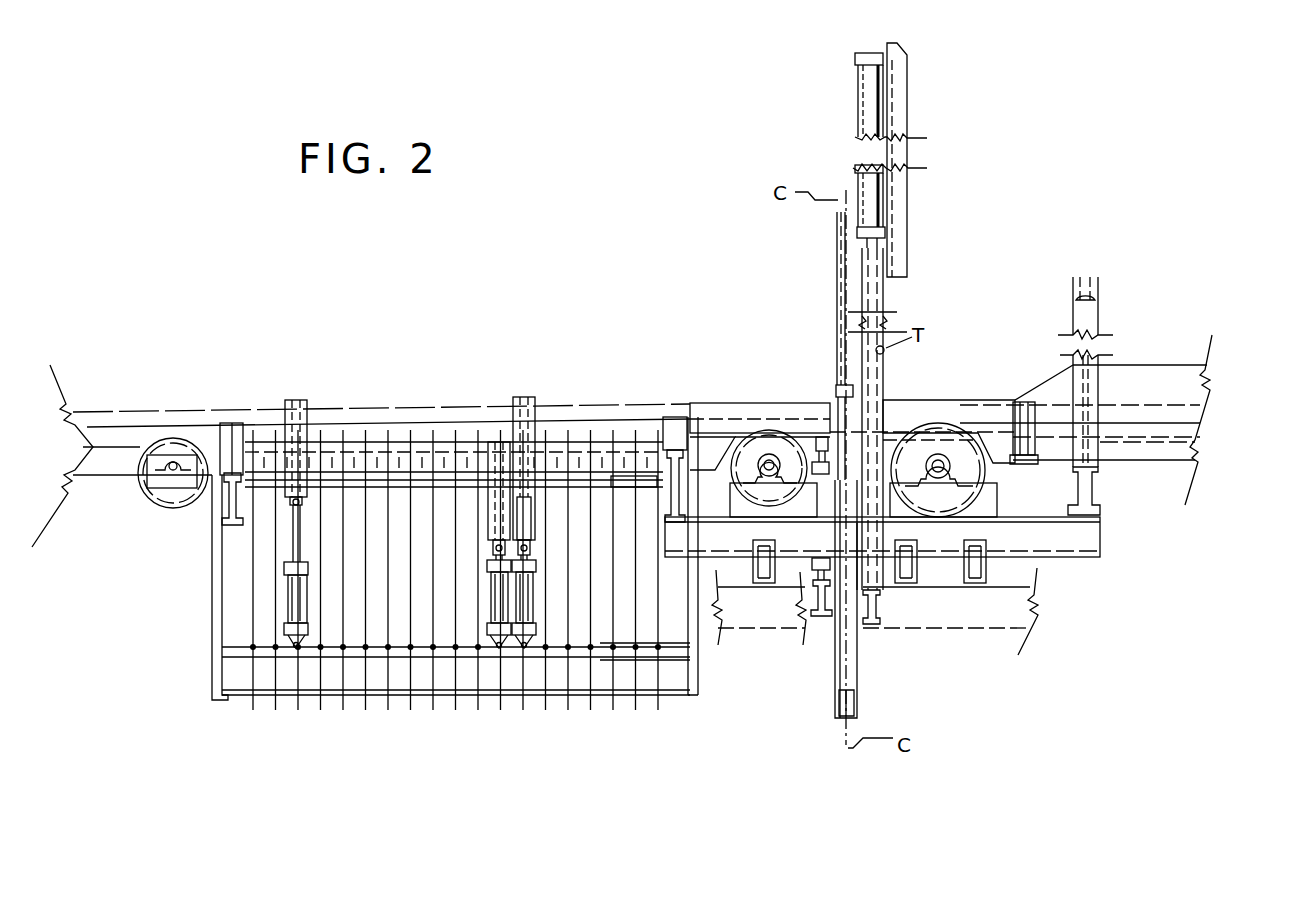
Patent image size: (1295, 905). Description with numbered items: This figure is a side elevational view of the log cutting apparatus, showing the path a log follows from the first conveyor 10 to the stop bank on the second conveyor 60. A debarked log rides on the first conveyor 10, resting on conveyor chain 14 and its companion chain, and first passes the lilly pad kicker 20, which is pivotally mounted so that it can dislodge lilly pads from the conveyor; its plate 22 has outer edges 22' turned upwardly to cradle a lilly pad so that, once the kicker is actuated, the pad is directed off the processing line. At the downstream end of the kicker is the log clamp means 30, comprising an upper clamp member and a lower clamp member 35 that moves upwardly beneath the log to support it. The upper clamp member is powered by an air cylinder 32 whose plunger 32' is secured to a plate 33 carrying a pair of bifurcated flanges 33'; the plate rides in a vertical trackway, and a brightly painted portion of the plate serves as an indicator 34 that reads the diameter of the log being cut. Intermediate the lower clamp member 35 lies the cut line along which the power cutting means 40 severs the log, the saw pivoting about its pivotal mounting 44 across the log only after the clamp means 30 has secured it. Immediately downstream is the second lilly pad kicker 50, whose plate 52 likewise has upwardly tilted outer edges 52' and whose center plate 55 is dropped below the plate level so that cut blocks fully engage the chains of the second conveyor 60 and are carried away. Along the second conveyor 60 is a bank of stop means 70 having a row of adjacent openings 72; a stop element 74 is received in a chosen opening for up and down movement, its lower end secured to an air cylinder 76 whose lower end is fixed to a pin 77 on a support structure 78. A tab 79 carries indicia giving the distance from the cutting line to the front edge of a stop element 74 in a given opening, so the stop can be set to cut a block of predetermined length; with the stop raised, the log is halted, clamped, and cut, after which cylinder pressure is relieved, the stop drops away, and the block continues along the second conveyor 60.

The first conveyor 10 is at (1220, 427).
The conveyor chain 14 is at (1147, 423).
The lilly pad kicker 20 is at (996, 394).
The plate 22 is at (1055, 396).
The outer edges 22' is at (875, 498).
The log clamp means 30 is at (910, 293).
The air cylinder 32 is at (861, 140).
The plunger 32' is at (912, 241).
The plate 33 is at (896, 476).
The bifurcated flanges 33' is at (922, 405).
The indicator 34 is at (893, 365).
The lower clamp member 35 is at (857, 682).
The power cutting means 40 is at (826, 244).
The pivotal mounting 44 is at (838, 385).
The second lilly pad kicker 50 is at (739, 352).
The lilly pad kicker plate 52 is at (760, 444).
The outer edges 52' is at (782, 393).
The center plate 55 is at (804, 432).
The second conveyor 60 is at (372, 395).
The stop means 70 is at (414, 707).
The openings 72 is at (646, 442).
The stop element 74 is at (533, 412).
The air cylinder 76 is at (532, 606).
The pin 77 is at (523, 653).
The support structure 78 is at (605, 660).
The tab 79 is at (628, 481).